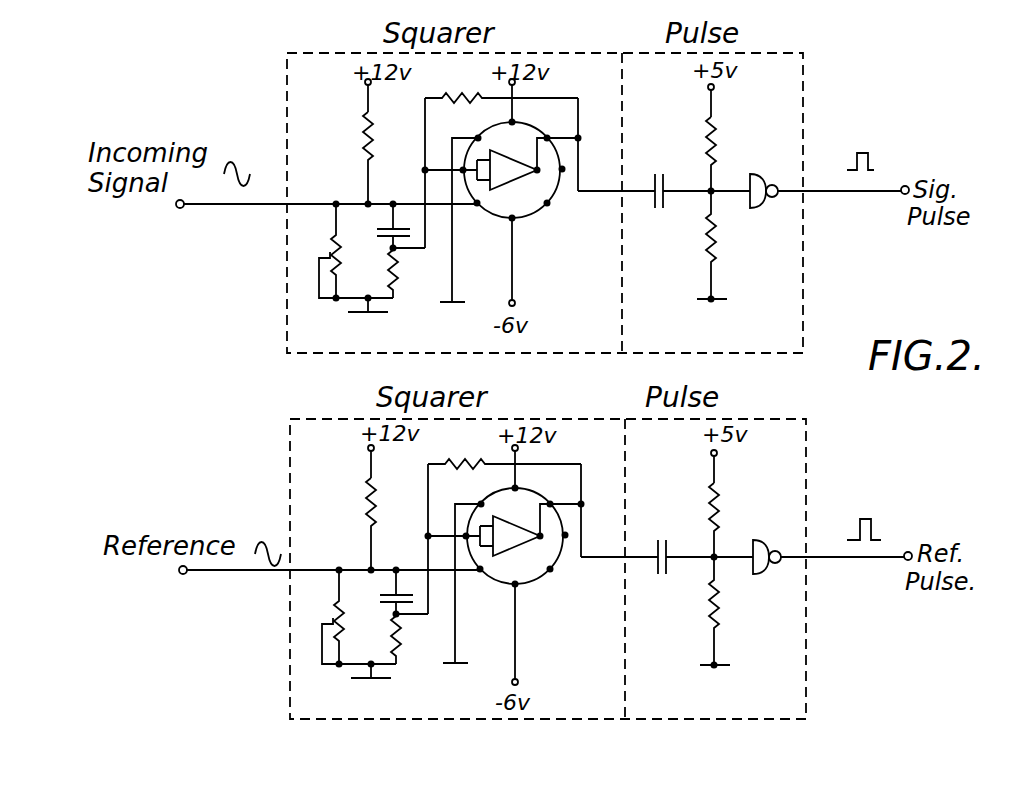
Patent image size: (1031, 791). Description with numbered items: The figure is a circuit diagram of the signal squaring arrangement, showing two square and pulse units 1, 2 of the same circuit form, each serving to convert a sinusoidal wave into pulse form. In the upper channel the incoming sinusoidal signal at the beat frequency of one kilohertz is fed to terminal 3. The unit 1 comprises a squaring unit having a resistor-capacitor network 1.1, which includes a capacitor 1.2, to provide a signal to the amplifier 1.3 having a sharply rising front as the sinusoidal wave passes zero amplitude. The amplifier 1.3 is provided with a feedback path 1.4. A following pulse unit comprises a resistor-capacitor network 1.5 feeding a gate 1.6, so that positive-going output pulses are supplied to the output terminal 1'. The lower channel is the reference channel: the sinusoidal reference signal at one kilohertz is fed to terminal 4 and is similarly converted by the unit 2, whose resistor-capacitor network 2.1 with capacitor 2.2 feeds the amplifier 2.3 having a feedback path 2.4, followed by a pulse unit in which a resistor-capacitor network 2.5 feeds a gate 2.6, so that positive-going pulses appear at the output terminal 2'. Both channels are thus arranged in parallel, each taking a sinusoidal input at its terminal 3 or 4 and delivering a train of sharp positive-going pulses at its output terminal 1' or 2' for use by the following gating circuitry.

The square and pulse unit 1 is at (545, 188).
The output terminal 1' is at (861, 161).
The resistor-capacitor network 1.1 is at (356, 251).
The capacitor 1.2 is at (398, 226).
The amplifier 1.3 is at (547, 206).
The feedback path 1.4 is at (456, 92).
The resistor-capacitor network 1.5 is at (702, 184).
The gate 1.6 is at (752, 184).
The square and pulse unit 2 is at (548, 553).
The output terminal 2' is at (853, 537).
The resistor-capacitor network 2.1 is at (359, 617).
The capacitor 2.2 is at (396, 574).
The amplifier 2.3 is at (526, 541).
The feedback path 2.4 is at (504, 448).
The resistor-capacitor network 2.5 is at (705, 551).
The gate 2.6 is at (774, 545).
The terminal 3 is at (180, 209).
The terminal 4 is at (326, 591).